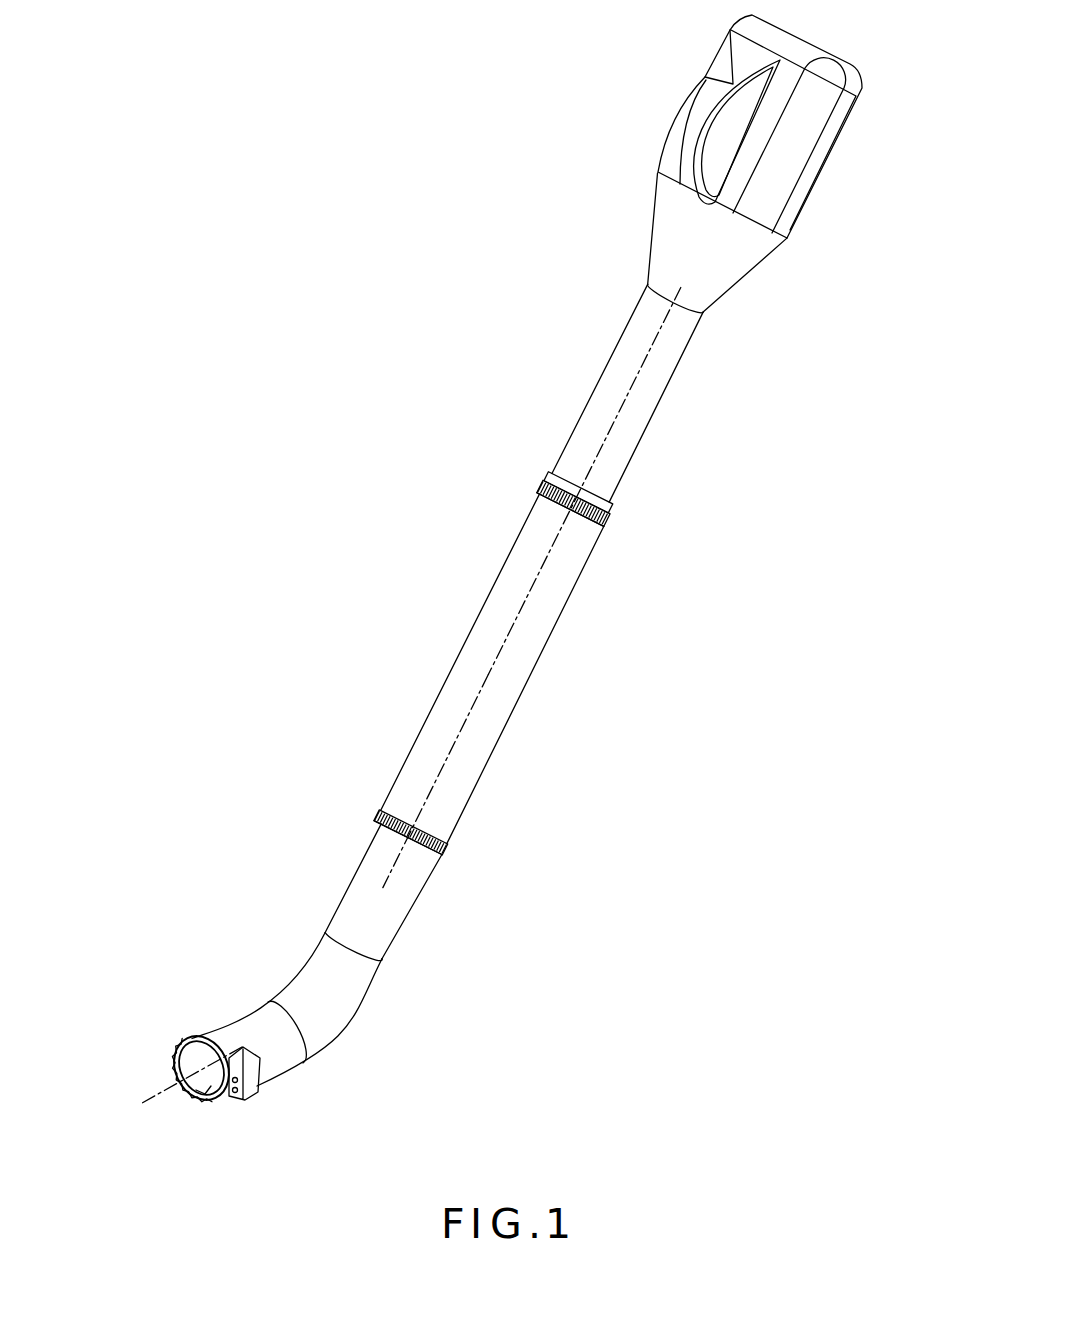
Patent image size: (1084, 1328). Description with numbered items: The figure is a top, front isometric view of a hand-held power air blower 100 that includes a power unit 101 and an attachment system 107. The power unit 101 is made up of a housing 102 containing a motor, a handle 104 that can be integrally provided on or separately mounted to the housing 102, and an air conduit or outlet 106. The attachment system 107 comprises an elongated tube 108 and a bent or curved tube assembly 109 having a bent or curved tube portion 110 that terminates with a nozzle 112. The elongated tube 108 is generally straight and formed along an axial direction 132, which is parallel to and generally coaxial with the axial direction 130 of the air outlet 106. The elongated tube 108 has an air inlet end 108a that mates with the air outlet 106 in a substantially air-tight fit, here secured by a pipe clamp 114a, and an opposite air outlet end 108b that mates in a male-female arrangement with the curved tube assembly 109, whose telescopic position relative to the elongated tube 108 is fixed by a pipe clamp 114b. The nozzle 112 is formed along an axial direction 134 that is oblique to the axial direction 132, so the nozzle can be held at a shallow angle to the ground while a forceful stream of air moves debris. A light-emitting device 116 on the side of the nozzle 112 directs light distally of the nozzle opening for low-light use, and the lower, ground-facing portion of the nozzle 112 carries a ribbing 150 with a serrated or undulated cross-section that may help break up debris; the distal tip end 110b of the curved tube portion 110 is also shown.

The power air blower 100 is at (360, 112).
The power unit 101 is at (533, 300).
The housing 102 is at (838, 152).
The handle 104 is at (688, 125).
The air conduit or outlet 106 is at (683, 365).
The attachment system 107 is at (342, 687).
The elongated tube 108 is at (532, 673).
The air inlet end 108a is at (610, 507).
The air outlet end 108b is at (382, 812).
The bent or curved tube assembly 109 is at (250, 968).
The bent or curved tube portion 110 is at (357, 982).
The distal tip end 110b is at (175, 1067).
The nozzle 112 is at (210, 1040).
The pipe clamp 114a is at (604, 522).
The pipe clamp 114b is at (447, 845).
The light-emitting device 116 is at (253, 1097).
The axial direction 130 is at (612, 425).
The axial direction 132 is at (493, 665).
The axial direction 134 is at (175, 1045).
The ribbing 150 is at (202, 1090).